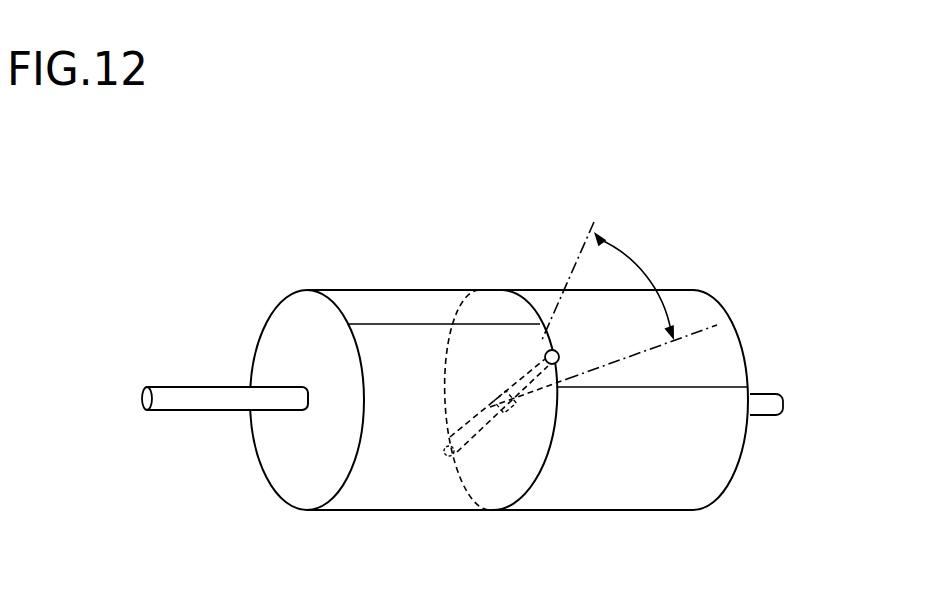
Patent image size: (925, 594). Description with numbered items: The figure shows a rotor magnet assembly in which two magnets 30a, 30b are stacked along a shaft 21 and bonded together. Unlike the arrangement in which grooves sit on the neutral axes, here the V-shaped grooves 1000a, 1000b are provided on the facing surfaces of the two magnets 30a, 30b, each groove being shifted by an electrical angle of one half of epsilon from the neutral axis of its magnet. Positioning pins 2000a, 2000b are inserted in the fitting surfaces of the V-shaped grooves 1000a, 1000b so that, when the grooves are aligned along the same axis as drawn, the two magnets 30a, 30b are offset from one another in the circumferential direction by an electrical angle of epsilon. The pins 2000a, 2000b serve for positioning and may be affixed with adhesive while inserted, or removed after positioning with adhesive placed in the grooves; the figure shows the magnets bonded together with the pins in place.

The rotary shaft 21 is at (176, 392).
The magnet 30a is at (368, 304).
The magnet 30b is at (681, 302).
The V-shaped groove 1000a is at (543, 358).
The V-shaped groove 1000b is at (558, 362).
The pin 2000a is at (540, 345).
The pin 2000b is at (448, 458).